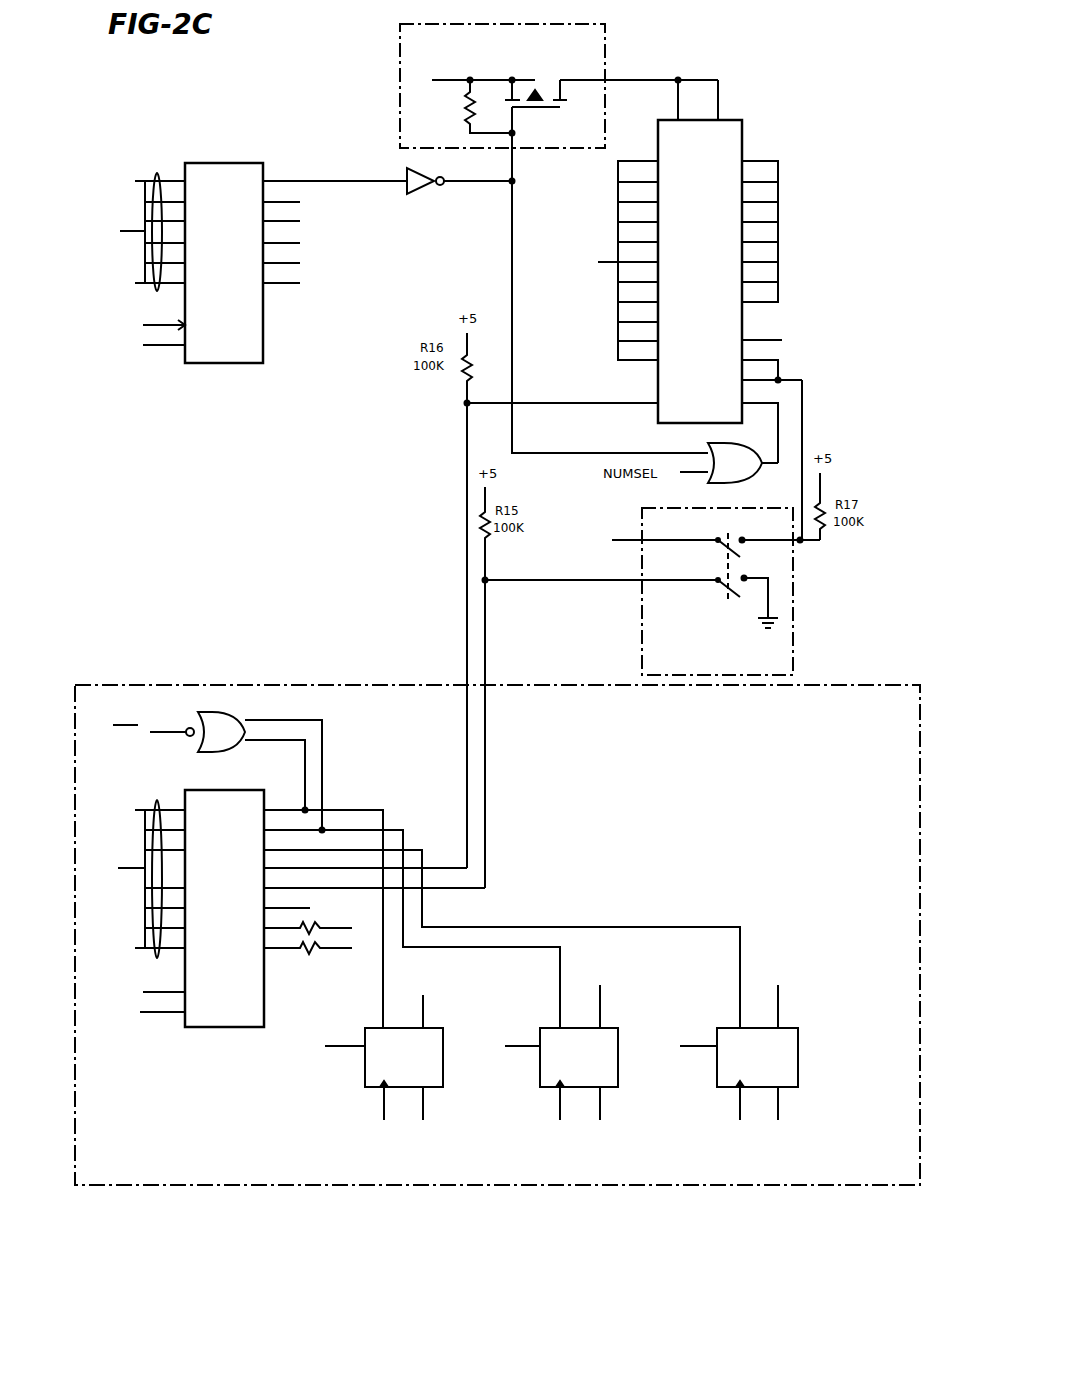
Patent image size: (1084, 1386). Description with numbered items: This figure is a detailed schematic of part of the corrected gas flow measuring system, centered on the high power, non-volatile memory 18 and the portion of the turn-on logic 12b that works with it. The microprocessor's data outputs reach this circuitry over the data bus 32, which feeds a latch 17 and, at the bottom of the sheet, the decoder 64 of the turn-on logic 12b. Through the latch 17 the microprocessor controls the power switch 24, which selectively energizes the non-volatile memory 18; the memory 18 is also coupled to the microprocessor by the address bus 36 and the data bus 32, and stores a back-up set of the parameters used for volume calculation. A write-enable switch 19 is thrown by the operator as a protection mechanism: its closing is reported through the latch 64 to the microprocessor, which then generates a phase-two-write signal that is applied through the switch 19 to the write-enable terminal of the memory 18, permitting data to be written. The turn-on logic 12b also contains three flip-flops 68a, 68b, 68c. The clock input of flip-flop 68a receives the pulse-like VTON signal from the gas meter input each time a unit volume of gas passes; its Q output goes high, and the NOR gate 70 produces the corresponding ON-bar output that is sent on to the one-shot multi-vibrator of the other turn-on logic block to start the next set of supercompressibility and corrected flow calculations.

The turn-on logic 12b is at (497, 935).
The latch 17 is at (263, 333).
The non-volatile memory 18 is at (740, 118).
The write-enable switch 19 is at (692, 592).
The power switch 24 is at (559, 86).
The data bus 32 is at (160, 154).
The address bus 36 is at (603, 240).
The decoder 64 is at (225, 790).
The flip-flop 68a is at (432, 1028).
The flip-flop 68b is at (607, 1028).
The flip-flop 68c is at (788, 1028).
The NOR gate 70 is at (218, 714).